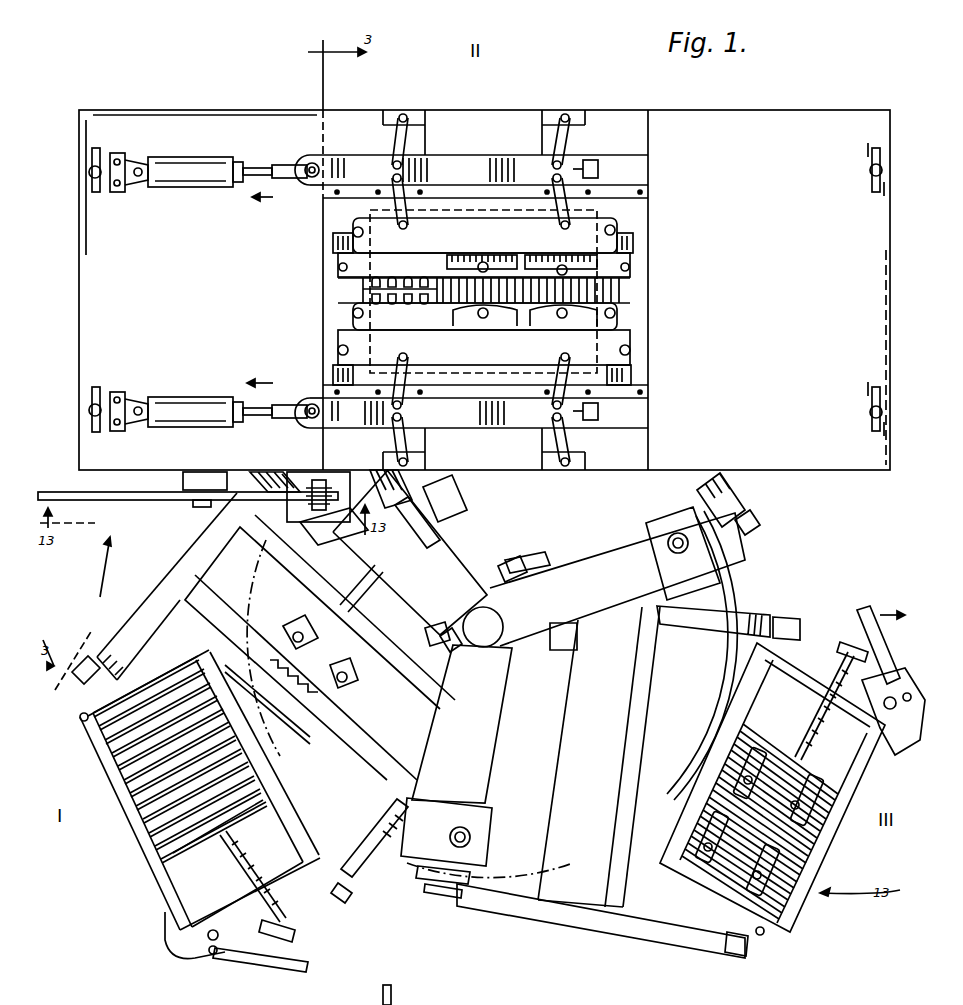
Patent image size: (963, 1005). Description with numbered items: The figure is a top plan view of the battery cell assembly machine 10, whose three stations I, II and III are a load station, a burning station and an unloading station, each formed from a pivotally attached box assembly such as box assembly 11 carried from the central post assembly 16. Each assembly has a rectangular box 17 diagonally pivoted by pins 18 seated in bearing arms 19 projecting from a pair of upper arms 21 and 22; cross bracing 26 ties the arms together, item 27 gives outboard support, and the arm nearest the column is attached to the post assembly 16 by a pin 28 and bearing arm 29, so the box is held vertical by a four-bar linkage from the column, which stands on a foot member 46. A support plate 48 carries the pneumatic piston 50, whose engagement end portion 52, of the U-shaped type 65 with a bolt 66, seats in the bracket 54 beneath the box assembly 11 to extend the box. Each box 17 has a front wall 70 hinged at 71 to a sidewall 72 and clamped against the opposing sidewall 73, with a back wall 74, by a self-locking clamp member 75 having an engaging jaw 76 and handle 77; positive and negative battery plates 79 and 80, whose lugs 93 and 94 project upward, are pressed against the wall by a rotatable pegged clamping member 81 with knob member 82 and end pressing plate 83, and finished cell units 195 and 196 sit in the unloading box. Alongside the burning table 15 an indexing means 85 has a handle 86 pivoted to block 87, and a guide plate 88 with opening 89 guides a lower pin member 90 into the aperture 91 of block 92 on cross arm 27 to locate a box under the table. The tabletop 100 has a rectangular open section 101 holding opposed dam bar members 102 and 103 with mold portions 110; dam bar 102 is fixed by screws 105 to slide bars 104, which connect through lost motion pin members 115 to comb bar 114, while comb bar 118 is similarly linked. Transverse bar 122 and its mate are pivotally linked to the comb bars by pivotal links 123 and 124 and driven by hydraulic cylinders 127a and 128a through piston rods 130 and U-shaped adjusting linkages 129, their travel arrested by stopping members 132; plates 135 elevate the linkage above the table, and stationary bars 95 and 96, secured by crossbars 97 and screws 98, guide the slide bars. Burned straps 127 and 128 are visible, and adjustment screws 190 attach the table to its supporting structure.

The battery cell assembly machine 10 is at (535, 925).
The box assembly 11 is at (120, 840).
The burning table 15 is at (258, 125).
The central post assembly 16 is at (490, 630).
The rectangular box 17 is at (587, 212).
The pins 18 is at (85, 670).
The bearing arms 19 is at (84, 690).
The upper arm 21 is at (180, 581).
The upper arm 22 is at (750, 602).
The cross bracing 26 is at (303, 587).
The outboard support 27 is at (437, 586).
The pin 28 is at (505, 590).
The bearing arm 29 is at (501, 565).
The foot member 46 is at (385, 870).
The support plate 48 is at (395, 725).
The pneumatic piston 50 is at (358, 590).
The engagement end portion 52 is at (280, 750).
The bracket 54 is at (315, 775).
The U-shaped engagement portion 65 is at (255, 690).
The bolt 66 is at (300, 715).
The front wall 70 is at (160, 870).
The hinge 71 is at (80, 719).
The sidewall 72 is at (170, 665).
The opposing sidewall 73 is at (280, 870).
The back wall 74 is at (718, 722).
The self-locking clamp member 75 is at (883, 640).
The engaging jaw 76 is at (170, 945).
The handle 77 is at (290, 975).
The positive plates 79 is at (215, 680).
The negative plates 80 is at (110, 780).
The rotatable pegged clamping member 81 is at (408, 274).
The knob member 82 is at (283, 930).
The end pressing plate 83 is at (240, 815).
The indexing means 85 is at (100, 498).
The handle 86 is at (148, 500).
The block 87 is at (203, 480).
The guide plate 88 is at (295, 478).
The opening 89 is at (335, 478).
The lower pin member 90 is at (324, 530).
The aperture 91 is at (680, 548).
The block 92 is at (668, 520).
The lugs 93 is at (175, 683).
The lugs 94 is at (170, 812).
The stationary bar 95 is at (425, 206).
The stationary bar 96 is at (378, 224).
The crossbars 97 is at (322, 196).
The screws 98 is at (424, 192).
The top plate portion 100 is at (232, 248).
The rectangular open section 101 is at (370, 289).
The dam bar member 102 is at (425, 258).
The dam bar member 103 is at (375, 313).
The slide bars 104 is at (345, 247).
The screws 105 is at (640, 262).
The mold portions 110 is at (530, 262).
The comb bar 114 is at (370, 332).
The lost motion pin members 115 is at (355, 232).
The comb bar 118 is at (468, 228).
The transversely positioned bar 122 is at (485, 426).
The pivotal links 123 is at (400, 125).
The pivotal links 124 is at (392, 192).
The strap 127 is at (820, 785).
The hydraulic cylinder 127a is at (195, 170).
The strap 128 is at (518, 322).
The hydraulic cylinder 128a is at (195, 410).
The U-shaped adjusting linkage 129 is at (487, 262).
The piston rod 130 is at (497, 324).
The stopping members 132 is at (595, 161).
The plates 135 is at (640, 282).
The adjustment screws 190 is at (101, 183).
The cell unit 195 is at (710, 905).
The cell unit 196 is at (790, 760).